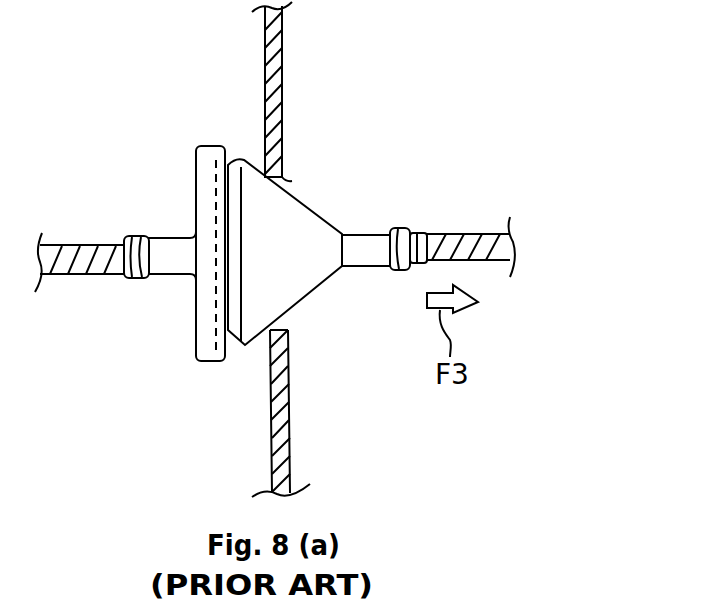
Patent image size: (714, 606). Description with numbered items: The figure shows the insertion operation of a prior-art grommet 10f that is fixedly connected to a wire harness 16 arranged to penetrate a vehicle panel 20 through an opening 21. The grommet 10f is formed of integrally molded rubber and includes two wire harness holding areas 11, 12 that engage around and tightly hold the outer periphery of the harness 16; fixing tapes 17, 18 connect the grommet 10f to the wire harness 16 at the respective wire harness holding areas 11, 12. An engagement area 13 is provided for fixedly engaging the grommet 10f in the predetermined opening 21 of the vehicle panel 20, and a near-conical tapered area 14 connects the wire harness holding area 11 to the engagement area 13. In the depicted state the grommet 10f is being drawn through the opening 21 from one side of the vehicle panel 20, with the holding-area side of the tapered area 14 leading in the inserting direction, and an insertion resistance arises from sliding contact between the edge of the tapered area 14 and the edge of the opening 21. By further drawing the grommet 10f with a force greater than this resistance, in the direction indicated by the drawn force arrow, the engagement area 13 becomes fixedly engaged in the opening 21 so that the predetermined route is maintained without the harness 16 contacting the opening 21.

The grommet 10f is at (383, 136).
The wire harness holding area 11 is at (374, 232).
The wire harness holding area 12 is at (162, 232).
The engagement area 13 is at (232, 348).
The tapered area 14 is at (297, 295).
The wire harness 16 is at (485, 231).
The fixing tape 17 is at (402, 230).
The fixing tape 18 is at (130, 237).
The vehicle panel 20 is at (283, 53).
The opening 21 is at (283, 182).